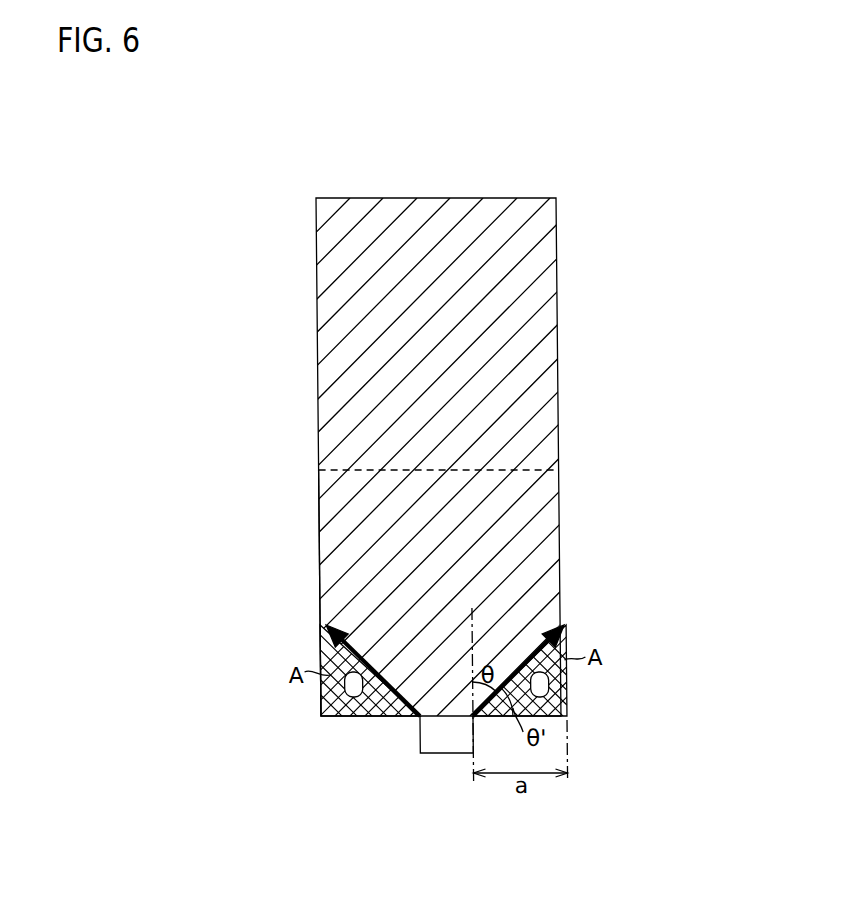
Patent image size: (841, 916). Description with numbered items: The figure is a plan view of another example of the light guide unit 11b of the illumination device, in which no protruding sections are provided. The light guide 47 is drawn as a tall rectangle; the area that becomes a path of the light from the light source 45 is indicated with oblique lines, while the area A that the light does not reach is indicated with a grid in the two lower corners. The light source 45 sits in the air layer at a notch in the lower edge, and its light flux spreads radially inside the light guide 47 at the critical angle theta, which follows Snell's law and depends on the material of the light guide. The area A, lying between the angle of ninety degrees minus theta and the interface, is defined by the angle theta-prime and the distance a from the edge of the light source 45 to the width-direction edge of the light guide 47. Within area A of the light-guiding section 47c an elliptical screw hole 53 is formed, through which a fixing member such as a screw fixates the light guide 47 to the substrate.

The light guide unit 11b is at (660, 167).
The light guide 47 is at (493, 205).
The light-guiding section 47c is at (318, 530).
The light source 45 is at (429, 745).
The screw hole 53 is at (350, 694).